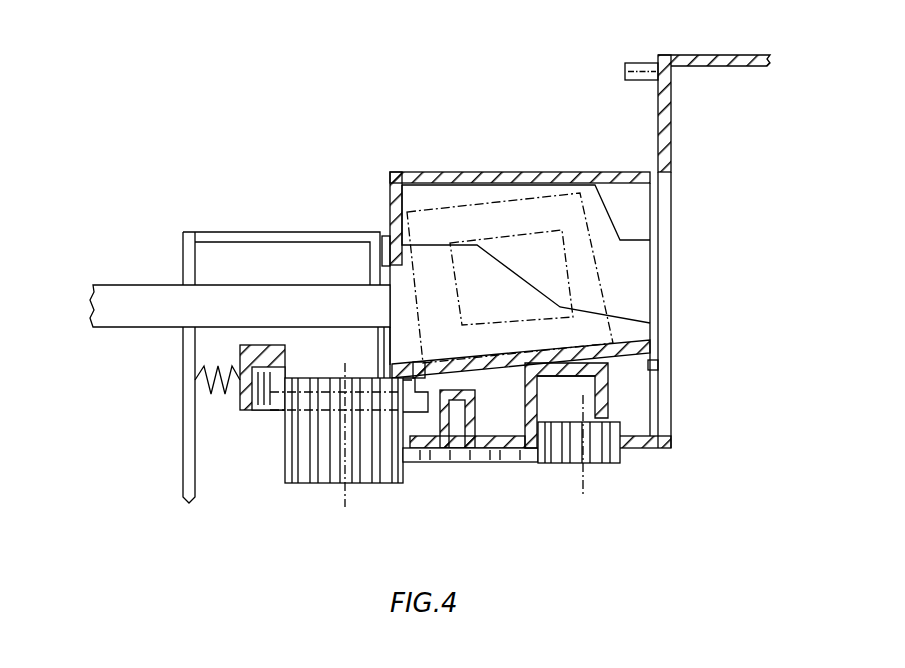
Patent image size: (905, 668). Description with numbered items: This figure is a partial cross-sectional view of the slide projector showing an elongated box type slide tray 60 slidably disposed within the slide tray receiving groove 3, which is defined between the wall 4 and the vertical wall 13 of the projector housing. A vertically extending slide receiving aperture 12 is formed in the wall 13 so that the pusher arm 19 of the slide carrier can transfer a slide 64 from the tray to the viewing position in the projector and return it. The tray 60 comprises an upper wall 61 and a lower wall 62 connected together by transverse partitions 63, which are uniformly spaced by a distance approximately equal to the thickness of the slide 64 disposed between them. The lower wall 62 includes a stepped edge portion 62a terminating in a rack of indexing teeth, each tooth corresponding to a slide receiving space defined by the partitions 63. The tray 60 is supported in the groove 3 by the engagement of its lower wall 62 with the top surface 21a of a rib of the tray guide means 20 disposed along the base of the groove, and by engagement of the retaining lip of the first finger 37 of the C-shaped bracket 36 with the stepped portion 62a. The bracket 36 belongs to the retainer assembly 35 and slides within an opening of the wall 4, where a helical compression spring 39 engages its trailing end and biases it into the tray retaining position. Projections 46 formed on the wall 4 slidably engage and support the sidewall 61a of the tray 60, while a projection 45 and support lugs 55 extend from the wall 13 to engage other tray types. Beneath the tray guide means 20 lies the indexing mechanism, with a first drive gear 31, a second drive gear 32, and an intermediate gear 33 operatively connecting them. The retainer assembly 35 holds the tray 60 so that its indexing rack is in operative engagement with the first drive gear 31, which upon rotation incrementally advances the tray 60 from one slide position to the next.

The slide tray receiving groove 3 is at (503, 146).
The wall 4 is at (282, 232).
The slide receiving aperture 12 is at (664, 207).
The vertical wall 13 is at (660, 132).
The pusher arm 19 is at (258, 298).
The tray guide means 20 is at (612, 399).
The top surface 21a is at (610, 370).
The first drive gear 31 is at (352, 480).
The second drive gear 32 is at (595, 465).
The intermediate gear 33 is at (496, 462).
The retainer assembly 35 is at (263, 423).
The C-shaped bracket 36 is at (280, 372).
The first finger 37 is at (420, 415).
The helical compression spring 39 is at (220, 392).
The projection 45 is at (632, 63).
The projections 46 is at (382, 238).
The support lugs 55 is at (655, 360).
The elongated box type slide tray 60 is at (500, 280).
The upper wall 61 is at (553, 172).
The sidewall 61a is at (393, 185).
The lower wall 62 is at (525, 343).
The stepped edge portion 62a is at (418, 362).
The transverse partitions 63 is at (545, 272).
The slide 64 is at (590, 263).